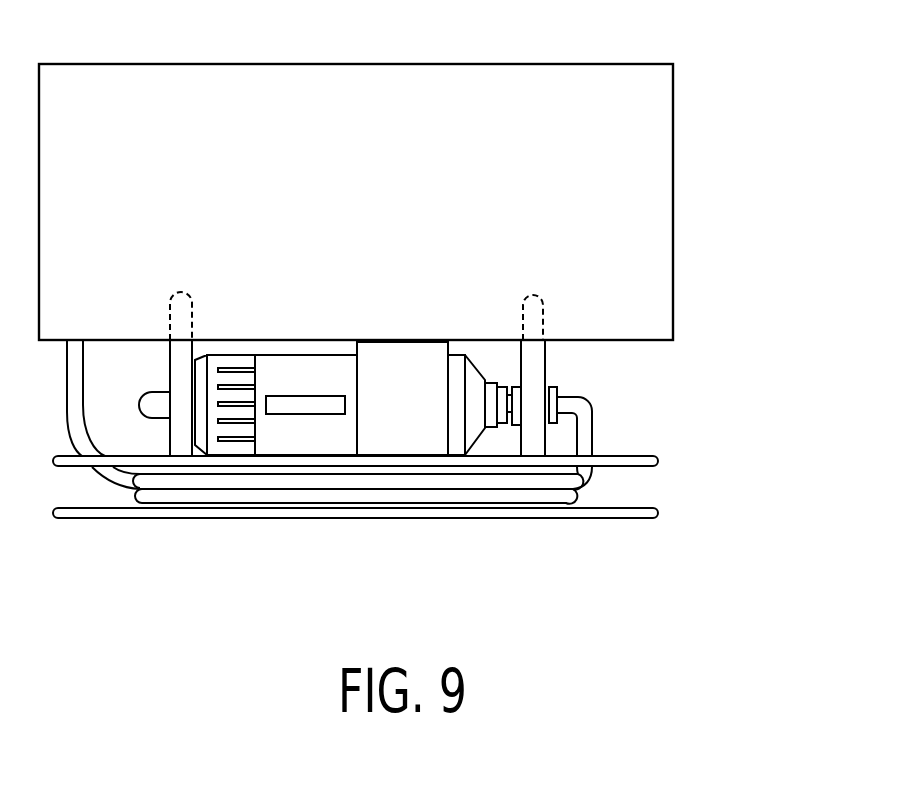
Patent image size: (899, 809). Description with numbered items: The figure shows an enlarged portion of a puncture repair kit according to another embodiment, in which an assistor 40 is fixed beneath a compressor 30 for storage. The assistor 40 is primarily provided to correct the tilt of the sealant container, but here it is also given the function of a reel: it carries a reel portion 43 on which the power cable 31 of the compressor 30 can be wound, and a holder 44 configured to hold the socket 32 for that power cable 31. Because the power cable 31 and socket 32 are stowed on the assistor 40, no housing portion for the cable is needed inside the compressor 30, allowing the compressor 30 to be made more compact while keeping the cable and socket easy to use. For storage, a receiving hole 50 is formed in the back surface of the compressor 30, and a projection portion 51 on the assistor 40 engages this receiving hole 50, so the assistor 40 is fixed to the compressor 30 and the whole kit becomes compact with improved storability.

The compressor 30 is at (647, 313).
The power cable 31 is at (542, 495).
The socket 32 is at (292, 435).
The assistor 40 is at (200, 518).
The reel portion 43 is at (445, 505).
The holder 44 is at (405, 430).
The receiving hole 50 is at (532, 307).
The projection portion 51 is at (534, 358).